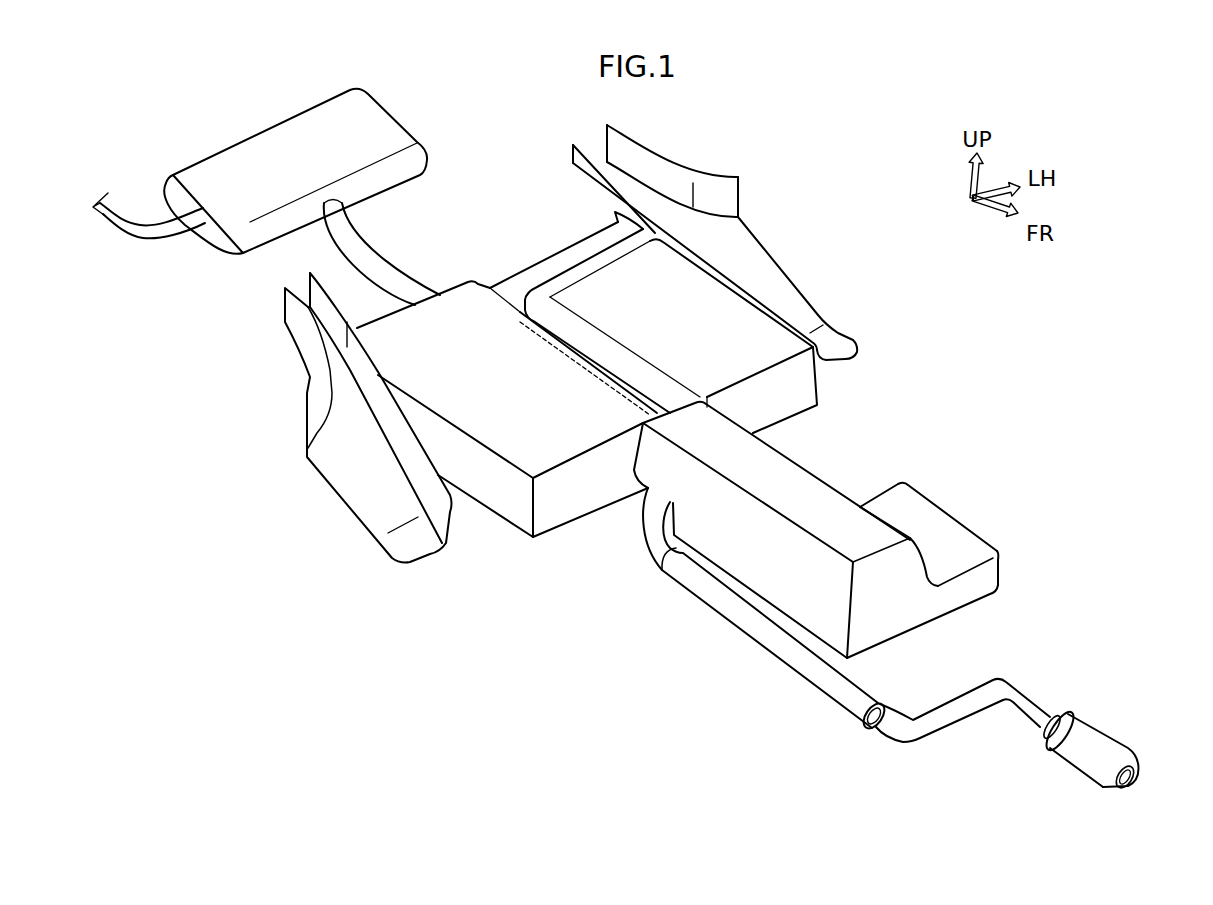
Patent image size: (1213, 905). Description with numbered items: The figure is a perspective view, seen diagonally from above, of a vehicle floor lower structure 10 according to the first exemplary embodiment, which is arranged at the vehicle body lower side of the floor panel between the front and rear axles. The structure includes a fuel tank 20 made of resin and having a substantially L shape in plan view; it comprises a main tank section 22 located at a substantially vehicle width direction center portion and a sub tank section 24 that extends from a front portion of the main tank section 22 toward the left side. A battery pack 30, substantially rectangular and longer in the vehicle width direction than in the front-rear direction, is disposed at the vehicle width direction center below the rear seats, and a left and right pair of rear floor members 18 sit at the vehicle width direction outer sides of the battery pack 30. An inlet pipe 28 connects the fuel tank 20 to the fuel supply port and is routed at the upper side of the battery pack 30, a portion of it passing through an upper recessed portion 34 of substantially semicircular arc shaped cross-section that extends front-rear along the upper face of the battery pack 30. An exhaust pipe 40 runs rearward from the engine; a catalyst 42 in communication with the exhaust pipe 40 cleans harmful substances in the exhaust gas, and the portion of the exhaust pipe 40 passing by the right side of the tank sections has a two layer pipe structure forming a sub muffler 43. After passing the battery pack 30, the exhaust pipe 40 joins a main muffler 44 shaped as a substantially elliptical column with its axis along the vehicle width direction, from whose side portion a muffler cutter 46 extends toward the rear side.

The vehicle floor lower structure 10 is at (630, 582).
The rear floor member 18 is at (753, 270).
The fuel tank 20 is at (838, 482).
The main tank section 22 is at (867, 537).
The sub tank section 24 is at (993, 572).
The inlet pipe 28 is at (597, 257).
The battery pack 30 is at (533, 545).
The upper recessed portion 34 is at (628, 367).
The exhaust pipe 40 is at (950, 730).
The catalyst 42 is at (1090, 738).
The sub muffler 43 is at (747, 637).
The main muffler 44 is at (362, 130).
The muffler cutter 46 is at (138, 233).